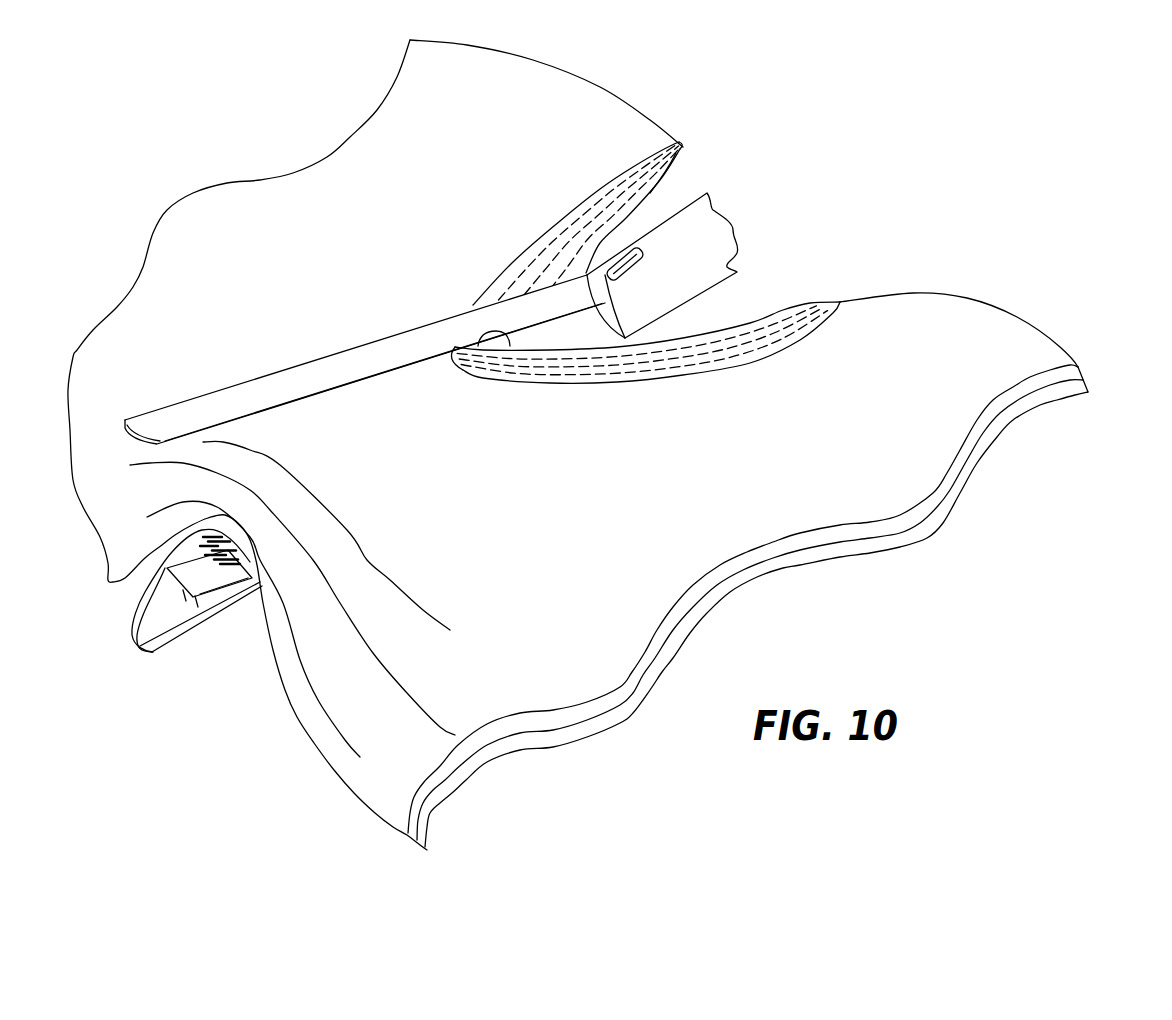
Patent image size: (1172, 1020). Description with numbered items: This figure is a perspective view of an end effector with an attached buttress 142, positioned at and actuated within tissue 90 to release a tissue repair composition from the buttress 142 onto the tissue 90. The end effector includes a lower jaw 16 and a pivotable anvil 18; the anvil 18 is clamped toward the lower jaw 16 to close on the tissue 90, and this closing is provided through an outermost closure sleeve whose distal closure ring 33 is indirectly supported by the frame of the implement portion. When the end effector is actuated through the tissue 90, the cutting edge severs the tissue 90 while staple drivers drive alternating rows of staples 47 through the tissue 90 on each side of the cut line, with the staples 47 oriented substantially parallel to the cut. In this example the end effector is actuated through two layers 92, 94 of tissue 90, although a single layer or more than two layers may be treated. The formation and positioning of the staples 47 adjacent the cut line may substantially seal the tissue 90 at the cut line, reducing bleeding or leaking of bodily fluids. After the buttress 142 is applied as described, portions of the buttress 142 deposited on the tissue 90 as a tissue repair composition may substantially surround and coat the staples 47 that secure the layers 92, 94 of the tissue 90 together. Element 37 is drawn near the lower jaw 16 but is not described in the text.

The tissue 90 is at (205, 138).
The staples 47 is at (627, 177).
The buttress 142 is at (527, 243).
The distal closure ring 33 is at (677, 280).
The anvil 18 is at (343, 368).
The first tissue layer 92 is at (1078, 365).
The second tissue layer 94 is at (1085, 380).
The lower jaw 16 is at (217, 613).
The tool tip 37 is at (177, 622).